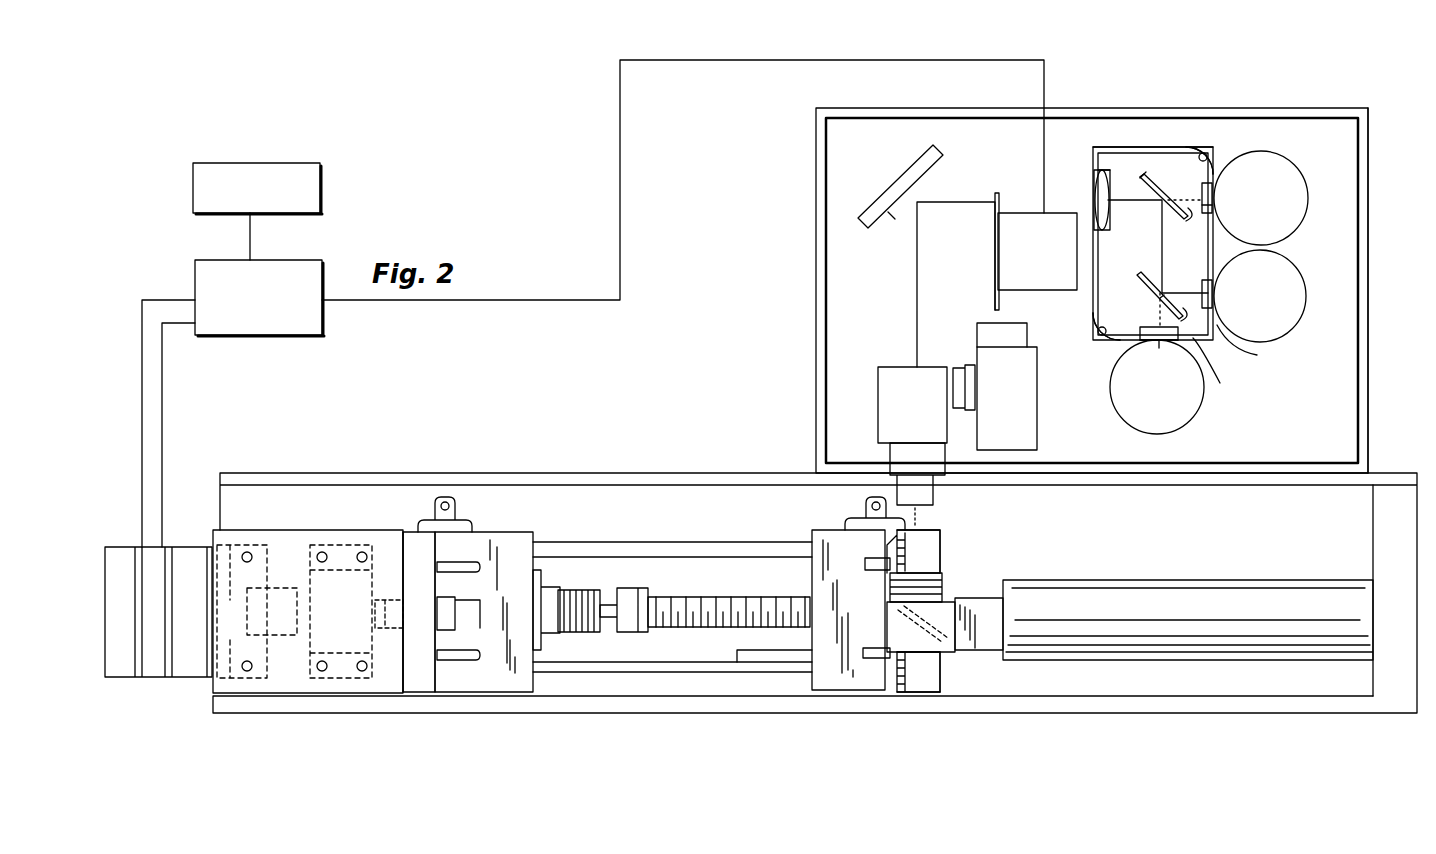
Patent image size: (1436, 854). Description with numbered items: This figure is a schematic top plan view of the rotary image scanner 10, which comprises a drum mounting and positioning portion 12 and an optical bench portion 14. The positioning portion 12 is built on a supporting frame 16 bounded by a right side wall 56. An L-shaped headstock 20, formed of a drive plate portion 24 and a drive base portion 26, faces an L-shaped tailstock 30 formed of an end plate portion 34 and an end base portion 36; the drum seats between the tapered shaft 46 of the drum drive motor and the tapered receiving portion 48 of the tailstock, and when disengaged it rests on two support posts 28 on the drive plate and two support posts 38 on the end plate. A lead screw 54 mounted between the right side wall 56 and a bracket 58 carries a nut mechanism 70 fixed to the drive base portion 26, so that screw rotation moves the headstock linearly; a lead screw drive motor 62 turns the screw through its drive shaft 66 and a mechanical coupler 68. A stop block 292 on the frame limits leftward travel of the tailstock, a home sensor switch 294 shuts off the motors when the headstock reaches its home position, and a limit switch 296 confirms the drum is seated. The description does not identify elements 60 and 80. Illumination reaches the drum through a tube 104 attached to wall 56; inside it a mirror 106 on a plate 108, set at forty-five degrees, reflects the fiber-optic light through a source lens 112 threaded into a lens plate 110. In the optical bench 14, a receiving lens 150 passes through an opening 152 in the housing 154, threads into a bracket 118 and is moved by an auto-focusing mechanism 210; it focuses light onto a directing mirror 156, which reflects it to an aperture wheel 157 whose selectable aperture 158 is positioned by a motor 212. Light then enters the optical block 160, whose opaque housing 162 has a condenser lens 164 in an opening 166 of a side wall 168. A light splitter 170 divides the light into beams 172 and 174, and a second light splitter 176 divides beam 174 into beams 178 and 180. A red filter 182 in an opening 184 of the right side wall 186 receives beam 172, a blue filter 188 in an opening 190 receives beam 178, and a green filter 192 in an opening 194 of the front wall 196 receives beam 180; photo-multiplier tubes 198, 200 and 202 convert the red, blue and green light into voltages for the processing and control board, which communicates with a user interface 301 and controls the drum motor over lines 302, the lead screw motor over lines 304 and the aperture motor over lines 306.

The rotary image scanner 10 is at (724, 168).
The drum mounting and positioning portion 12 is at (740, 716).
The optical bench portion 14 is at (1290, 104).
The supporting frame 16 is at (1407, 705).
The headstock 20 is at (420, 694).
The drive plate portion 24 is at (412, 532).
The drive base portion 26 is at (507, 693).
The support posts 28 is at (472, 562).
The tailstock 30 is at (925, 694).
The end plate portion 34 is at (935, 695).
The end base portion 36 is at (827, 690).
The support posts 38 is at (870, 560).
The tapered shaft 46 is at (452, 602).
The tapered receiving portion 48 is at (888, 686).
The lead screw 54 is at (695, 597).
The right side wall 56 is at (1390, 530).
The bracket 58 is at (338, 678).
The gear block 60 is at (297, 693).
The lead screw drive motor 62 is at (147, 678).
The drive shaft 66 is at (238, 600).
The mechanical coupler 68 is at (297, 725).
The nut mechanism 70 is at (578, 633).
The guide rail 80 is at (692, 674).
The tube 104 is at (1142, 580).
The mirror 106 is at (888, 632).
The plate 108 is at (884, 605).
The lens plate 110 is at (978, 598).
The source lens 112 is at (940, 582).
The bracket 118 is at (876, 376).
The receiving lens 150 is at (903, 498).
The opening 152 is at (950, 462).
The housing 154 is at (1368, 368).
The directing mirror 156 is at (882, 198).
The aperture wheel 157 is at (992, 225).
The selectable aperture 158 is at (994, 196).
The optical block 160 is at (1113, 146).
The opaque housing 162 is at (1143, 180).
The condenser lens 164 is at (1094, 185).
The opening 166 is at (1143, 186).
The side wall 168 is at (1094, 288).
The light splitter 170 is at (1147, 178).
The light beam 172 is at (1178, 213).
The light beam 174 is at (1160, 245).
The light splitter 176 is at (1138, 282).
The light beam 178 is at (1177, 293).
The light beam 180 is at (1124, 336).
The red filter 182 is at (1216, 192).
The opening 184 is at (1216, 225).
The right side wall 186 is at (1218, 170).
The blue filter 188 is at (1214, 294).
The opening 190 is at (1263, 349).
The green filter 192 is at (1164, 353).
The opening 194 is at (1140, 342).
The front wall 196 is at (1228, 373).
The photo-multiplier tube 198 is at (1295, 163).
The photo-multiplier tube 200 is at (1302, 282).
The photo-multiplier tube 202 is at (1131, 418).
The auto-focusing mechanism 210 is at (977, 347).
The motor 212 is at (1040, 212).
The stop block 292 is at (750, 650).
The home sensor switch 294 is at (445, 497).
The limit switch 296 is at (860, 493).
The user interface 301 is at (322, 185).
The lines 302 is at (177, 324).
The lines 304 is at (175, 299).
The lines 306 is at (793, 60).